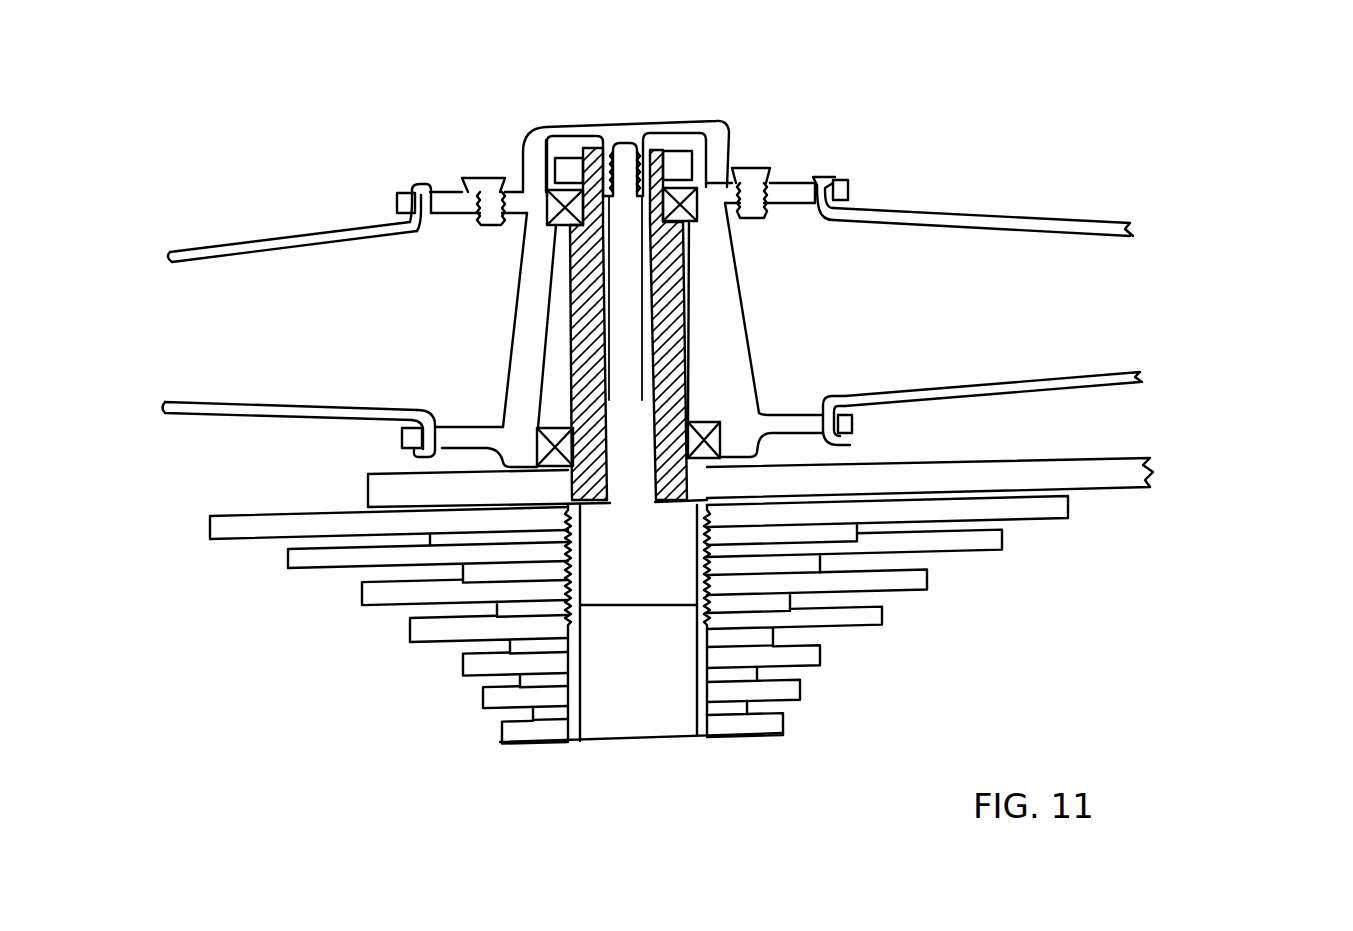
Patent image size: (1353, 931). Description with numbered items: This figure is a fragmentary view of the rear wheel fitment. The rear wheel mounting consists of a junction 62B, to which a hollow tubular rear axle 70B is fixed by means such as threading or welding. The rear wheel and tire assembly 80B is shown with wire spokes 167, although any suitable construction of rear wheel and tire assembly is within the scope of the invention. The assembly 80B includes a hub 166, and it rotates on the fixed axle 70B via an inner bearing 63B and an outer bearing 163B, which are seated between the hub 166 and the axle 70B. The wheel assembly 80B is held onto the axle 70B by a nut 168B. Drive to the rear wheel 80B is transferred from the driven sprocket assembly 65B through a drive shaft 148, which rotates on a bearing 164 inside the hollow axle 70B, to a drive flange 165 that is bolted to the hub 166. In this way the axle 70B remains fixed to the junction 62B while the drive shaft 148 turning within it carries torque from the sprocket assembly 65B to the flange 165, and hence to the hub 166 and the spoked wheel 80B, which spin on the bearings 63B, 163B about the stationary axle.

The drive flange 165 is at (712, 128).
The hub 166 is at (725, 335).
The hollow tubular rear axle 70B is at (665, 300).
The nut 168B is at (571, 168).
The outer bearing 163B is at (690, 195).
The bearing 164 is at (578, 427).
The inner bearing 63B is at (720, 423).
The rear wheel and tire assembly 80B is at (205, 183).
The wire spokes 167 is at (1095, 215).
The junction 62B is at (1107, 472).
The drive shaft 148 is at (647, 580).
The driven sprocket assembly 65B is at (800, 692).